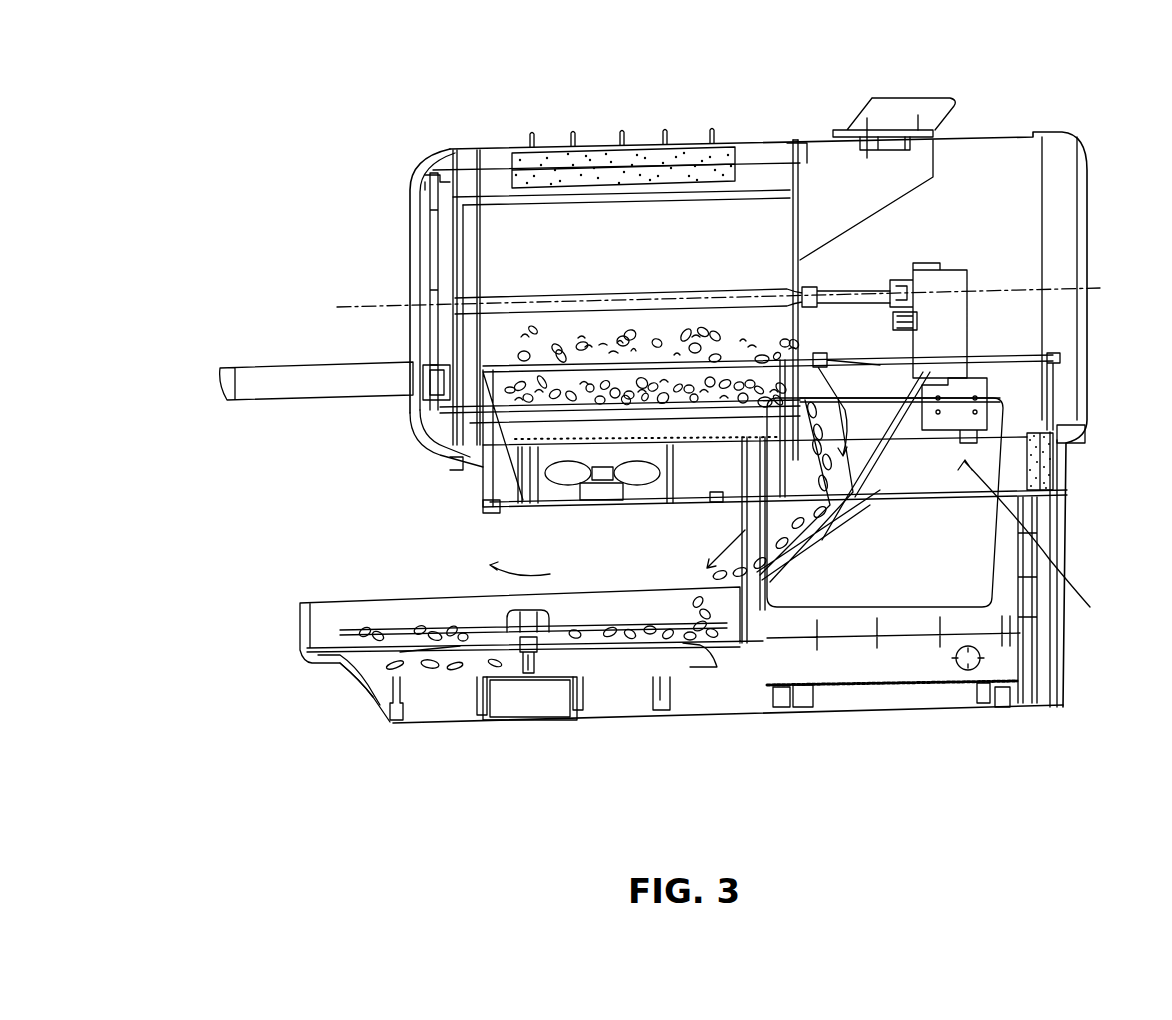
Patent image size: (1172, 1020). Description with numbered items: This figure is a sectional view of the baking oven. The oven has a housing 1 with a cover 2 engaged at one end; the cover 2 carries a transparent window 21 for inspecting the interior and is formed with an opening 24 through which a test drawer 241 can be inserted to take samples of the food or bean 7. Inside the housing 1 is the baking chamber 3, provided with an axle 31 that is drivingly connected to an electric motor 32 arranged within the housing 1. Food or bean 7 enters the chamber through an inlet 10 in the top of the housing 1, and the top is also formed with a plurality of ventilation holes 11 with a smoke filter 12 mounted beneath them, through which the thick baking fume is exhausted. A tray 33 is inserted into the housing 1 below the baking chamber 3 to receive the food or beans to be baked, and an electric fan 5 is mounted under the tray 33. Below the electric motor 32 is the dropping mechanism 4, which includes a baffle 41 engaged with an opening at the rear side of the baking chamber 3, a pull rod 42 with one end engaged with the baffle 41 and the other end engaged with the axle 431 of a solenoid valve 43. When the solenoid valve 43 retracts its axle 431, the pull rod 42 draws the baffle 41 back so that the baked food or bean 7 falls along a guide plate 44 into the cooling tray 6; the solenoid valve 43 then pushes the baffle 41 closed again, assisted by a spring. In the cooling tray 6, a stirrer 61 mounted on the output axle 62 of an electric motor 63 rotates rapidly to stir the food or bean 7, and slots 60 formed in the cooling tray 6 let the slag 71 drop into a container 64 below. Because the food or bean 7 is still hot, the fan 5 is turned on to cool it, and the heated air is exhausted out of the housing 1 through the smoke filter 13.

The housing 1 is at (1083, 150).
The cover 2 is at (437, 147).
The baking chamber 3 is at (512, 240).
The dropping mechanism 4 is at (748, 560).
The electric fan 5 is at (510, 513).
The cooling tray 6 is at (300, 628).
The food or bean 7 is at (625, 362).
The inlet 10 is at (890, 140).
The ventilation holes 11 is at (573, 146).
The smoke filter 12 is at (690, 166).
The smoke filter 13 is at (1053, 462).
The transparent window 21 is at (418, 243).
The opening 24 is at (425, 370).
The test drawer 241 is at (250, 388).
The axle 31 is at (675, 297).
The electric motor 32 is at (953, 287).
The tray 33 is at (427, 447).
The baffle 41 is at (813, 405).
The pull rod 42 is at (880, 393).
The solenoid valve 43 is at (977, 392).
The guide plate 44 is at (810, 540).
The axle of solenoid valve 431 is at (908, 410).
The slots 60 is at (420, 653).
The stirrer 61 is at (348, 632).
The output axle 62 is at (533, 670).
The electric motor 63 is at (523, 707).
The container 64 is at (357, 673).
The slag 71 is at (710, 437).